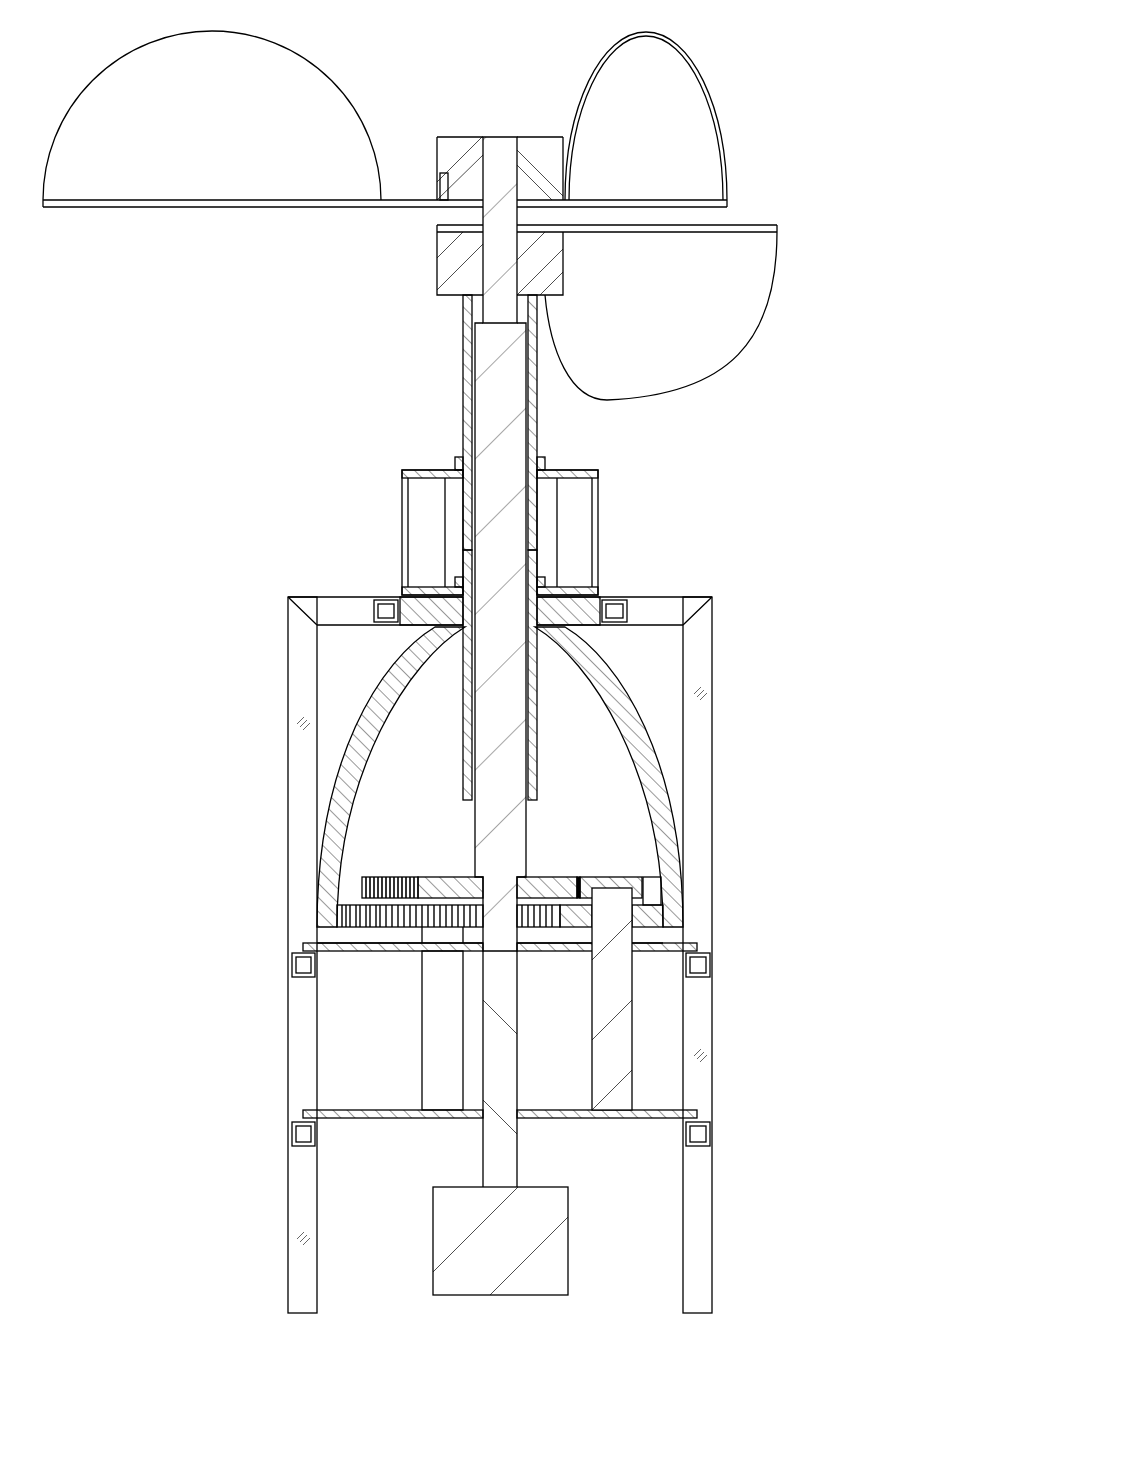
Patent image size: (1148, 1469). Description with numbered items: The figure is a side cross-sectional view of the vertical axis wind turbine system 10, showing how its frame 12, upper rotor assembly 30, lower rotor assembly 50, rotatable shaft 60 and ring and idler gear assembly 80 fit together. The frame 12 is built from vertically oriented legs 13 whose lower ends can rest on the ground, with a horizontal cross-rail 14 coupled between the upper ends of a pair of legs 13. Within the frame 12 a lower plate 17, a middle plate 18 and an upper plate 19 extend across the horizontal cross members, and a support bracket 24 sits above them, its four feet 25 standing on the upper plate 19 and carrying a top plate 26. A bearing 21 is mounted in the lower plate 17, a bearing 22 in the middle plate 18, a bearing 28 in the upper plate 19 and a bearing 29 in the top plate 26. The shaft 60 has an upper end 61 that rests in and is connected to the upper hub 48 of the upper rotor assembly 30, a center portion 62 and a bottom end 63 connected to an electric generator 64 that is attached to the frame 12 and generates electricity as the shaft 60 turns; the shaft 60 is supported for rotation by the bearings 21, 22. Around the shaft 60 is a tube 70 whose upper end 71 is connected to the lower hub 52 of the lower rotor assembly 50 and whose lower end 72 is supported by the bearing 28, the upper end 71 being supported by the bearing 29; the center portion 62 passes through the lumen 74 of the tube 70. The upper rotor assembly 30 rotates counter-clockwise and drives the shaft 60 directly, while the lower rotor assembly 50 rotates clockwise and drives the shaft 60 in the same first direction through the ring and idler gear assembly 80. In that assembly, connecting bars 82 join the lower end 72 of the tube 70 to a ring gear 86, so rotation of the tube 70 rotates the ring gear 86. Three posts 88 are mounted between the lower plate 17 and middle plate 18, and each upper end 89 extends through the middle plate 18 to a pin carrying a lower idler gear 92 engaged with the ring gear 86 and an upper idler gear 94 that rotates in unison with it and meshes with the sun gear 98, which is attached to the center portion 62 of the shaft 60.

The wind turbine system 10 is at (867, 127).
The frame 12 is at (286, 1170).
The legs 13 is at (318, 1222).
The horizontal cross-rail 14 is at (660, 620).
The lower plate 17 is at (650, 1115).
The middle plate 18 is at (658, 952).
The upper plate 19 is at (598, 585).
The bearing 21 is at (480, 1115).
The bearing 22 is at (477, 942).
The support bracket 24 is at (400, 520).
The feet 25 is at (598, 550).
The top plate 26 is at (402, 472).
The bearing 28 is at (455, 582).
The bearing 29 is at (460, 462).
The upper rotor assembly 30 is at (725, 125).
The upper hub 48 is at (458, 145).
The lower rotor assembly 50 is at (732, 348).
The lower hub 52 is at (548, 255).
The rotatable shaft 60 is at (500, 752).
The upper end 61 is at (497, 150).
The center portion 62 is at (490, 690).
The bottom end 63 is at (520, 1150).
The electric generator 64 is at (522, 1272).
The tube 70 is at (537, 445).
The upper end 71 is at (463, 318).
The lower end 72 is at (465, 770).
The lumen 74 is at (537, 530).
The ring and idler gear assembly 80 is at (358, 710).
The connecting bars 82 is at (617, 708).
The ring gear 86 is at (678, 918).
The posts 88 is at (433, 1045).
The upper end 89 is at (470, 932).
The lower idler gears 92 is at (650, 917).
The upper idler gears 94 is at (375, 877).
The sun gear 98 is at (440, 877).